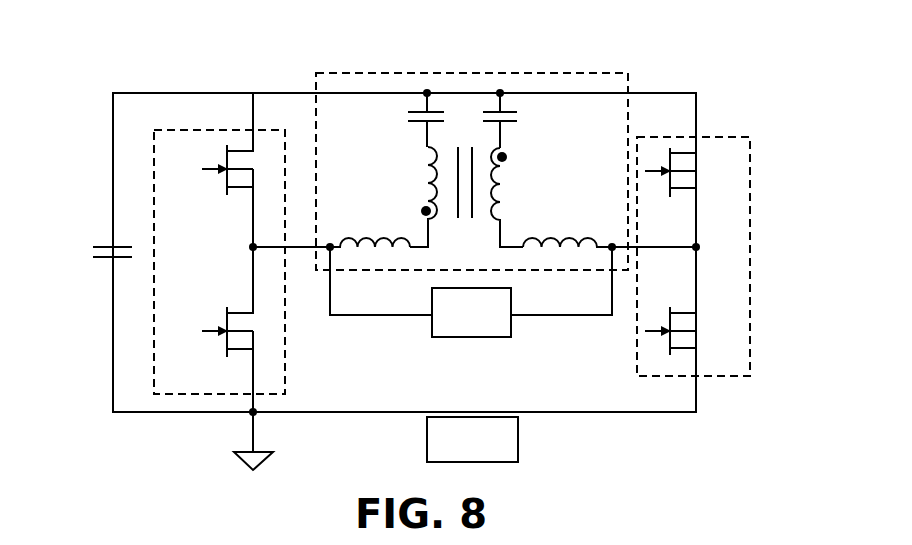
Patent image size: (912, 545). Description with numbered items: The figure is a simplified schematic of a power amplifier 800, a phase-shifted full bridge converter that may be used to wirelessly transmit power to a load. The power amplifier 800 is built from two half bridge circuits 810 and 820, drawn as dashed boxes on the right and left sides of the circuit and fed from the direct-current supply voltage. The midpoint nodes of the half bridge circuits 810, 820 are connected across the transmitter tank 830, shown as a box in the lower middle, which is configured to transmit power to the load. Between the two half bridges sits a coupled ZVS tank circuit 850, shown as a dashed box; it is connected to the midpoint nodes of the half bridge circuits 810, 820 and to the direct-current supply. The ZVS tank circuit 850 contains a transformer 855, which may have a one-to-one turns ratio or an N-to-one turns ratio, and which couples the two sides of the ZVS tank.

The power amplifier 800 is at (684, 53).
The half bridge circuit 810 is at (752, 168).
The half bridge circuit 820 is at (154, 150).
The transmitter tank 830 is at (470, 338).
The ZVS tank circuit 850 is at (388, 272).
The transformer 855 is at (480, 155).